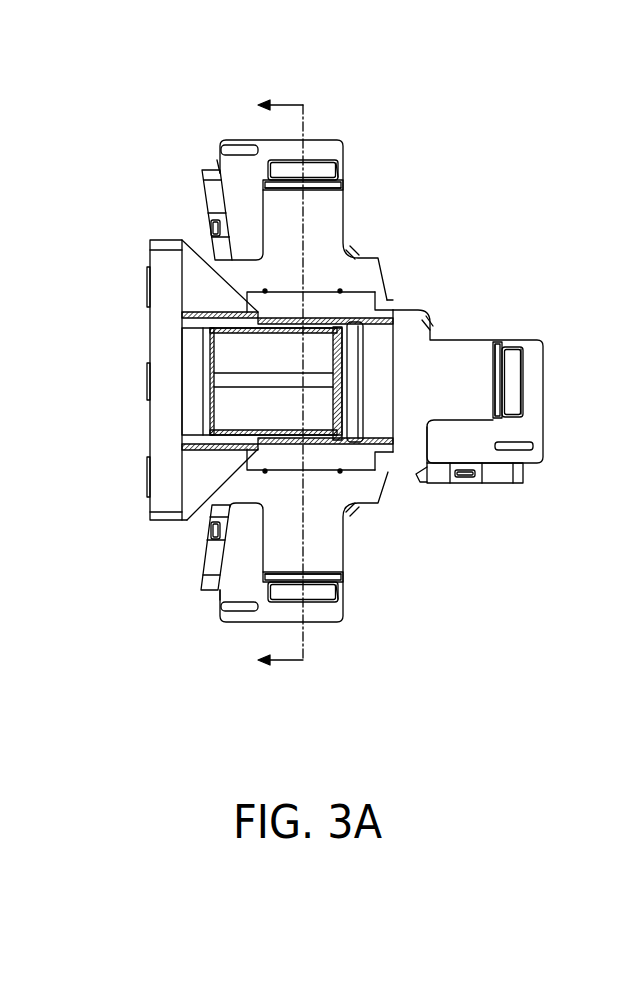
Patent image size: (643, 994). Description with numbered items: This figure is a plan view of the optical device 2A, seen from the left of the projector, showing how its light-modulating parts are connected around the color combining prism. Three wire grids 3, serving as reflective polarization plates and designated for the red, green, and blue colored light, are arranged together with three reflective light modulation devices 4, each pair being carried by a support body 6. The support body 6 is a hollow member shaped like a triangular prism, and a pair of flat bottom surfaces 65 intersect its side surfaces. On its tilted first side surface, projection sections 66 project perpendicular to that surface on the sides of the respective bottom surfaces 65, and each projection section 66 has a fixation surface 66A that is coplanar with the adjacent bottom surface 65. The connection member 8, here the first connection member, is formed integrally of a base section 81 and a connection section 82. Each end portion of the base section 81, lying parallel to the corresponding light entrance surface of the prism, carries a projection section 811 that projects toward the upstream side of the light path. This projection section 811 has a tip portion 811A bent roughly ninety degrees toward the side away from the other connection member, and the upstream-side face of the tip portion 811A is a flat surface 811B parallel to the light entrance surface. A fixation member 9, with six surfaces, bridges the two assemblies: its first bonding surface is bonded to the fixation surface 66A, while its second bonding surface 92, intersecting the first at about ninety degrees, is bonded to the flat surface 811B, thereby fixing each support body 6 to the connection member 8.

The optical device 2A is at (99, 118).
The wire grid 3 is at (352, 248).
The reflective light modulation device 4 is at (211, 192).
The support body 6 is at (217, 173).
The bottom surface 65 is at (243, 225).
The projection section 66 is at (267, 139).
The fixation surface 66A is at (218, 146).
The connection member 8 is at (157, 397).
The base section 81 is at (384, 295).
The projection section 811 is at (322, 210).
The tip portion 811A is at (345, 196).
The flat surface 811B is at (340, 173).
The connection section 82 is at (157, 433).
The fixation member 9 is at (320, 168).
The second bonding surface 92 is at (284, 190).